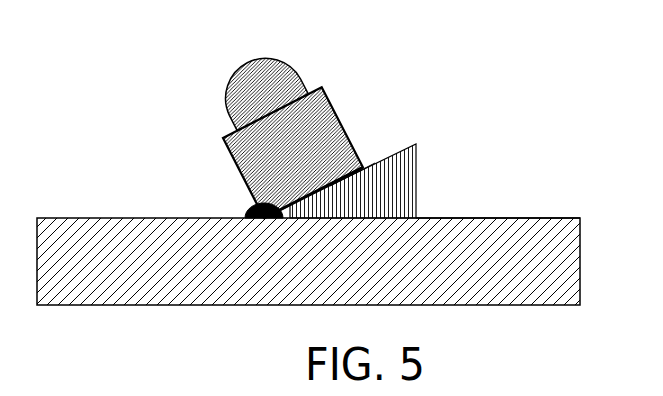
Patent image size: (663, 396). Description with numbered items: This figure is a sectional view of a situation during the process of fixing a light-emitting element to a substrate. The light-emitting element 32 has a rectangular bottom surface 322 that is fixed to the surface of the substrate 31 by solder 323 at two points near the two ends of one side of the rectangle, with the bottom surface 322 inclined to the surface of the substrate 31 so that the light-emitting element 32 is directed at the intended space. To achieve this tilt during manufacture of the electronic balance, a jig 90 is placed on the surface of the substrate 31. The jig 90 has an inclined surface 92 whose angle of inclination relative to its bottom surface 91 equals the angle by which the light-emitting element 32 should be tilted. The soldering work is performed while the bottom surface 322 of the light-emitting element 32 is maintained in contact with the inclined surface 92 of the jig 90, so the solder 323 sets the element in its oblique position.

The substrate 31 is at (112, 252).
The light-emitting element 32 is at (236, 135).
The bottom surface 322 is at (378, 165).
The solder 323 is at (248, 212).
The jig 90 is at (392, 188).
The bottom surface 91 is at (502, 218).
The inclined surface 92 is at (326, 182).